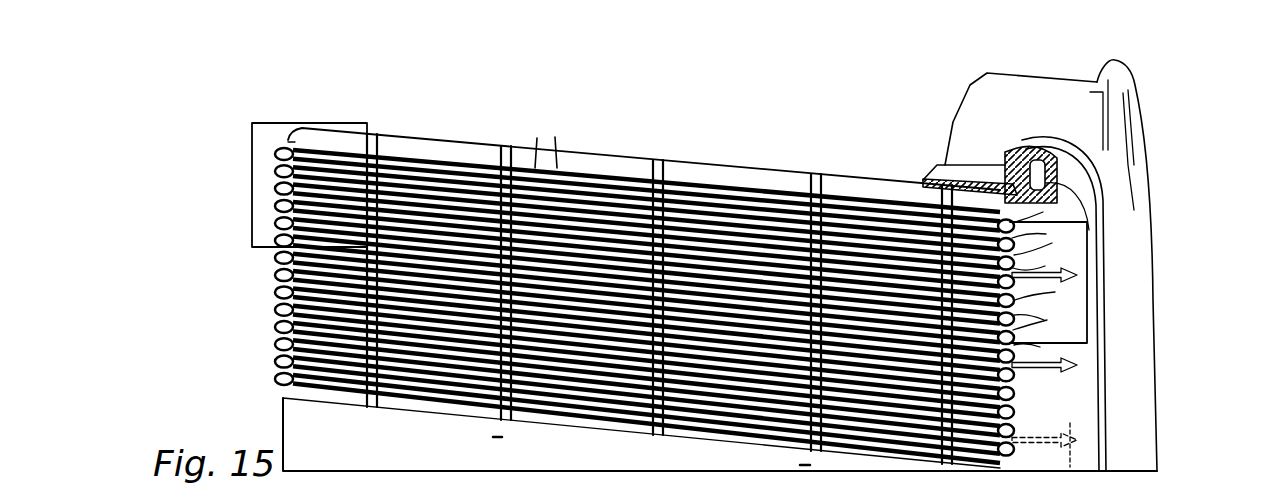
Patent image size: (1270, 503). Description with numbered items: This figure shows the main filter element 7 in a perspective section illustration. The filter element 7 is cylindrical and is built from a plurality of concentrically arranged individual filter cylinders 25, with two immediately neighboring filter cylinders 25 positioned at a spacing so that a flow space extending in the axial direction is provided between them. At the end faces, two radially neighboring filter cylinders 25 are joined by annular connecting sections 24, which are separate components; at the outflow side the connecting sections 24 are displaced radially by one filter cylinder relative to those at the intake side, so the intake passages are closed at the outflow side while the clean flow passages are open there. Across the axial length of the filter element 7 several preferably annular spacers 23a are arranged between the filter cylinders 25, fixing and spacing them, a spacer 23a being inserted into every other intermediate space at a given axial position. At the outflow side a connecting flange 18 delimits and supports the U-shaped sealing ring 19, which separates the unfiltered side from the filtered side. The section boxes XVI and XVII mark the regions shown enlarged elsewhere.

The filter element 7 is at (440, 126).
The connecting flange 18 is at (1007, 165).
The sealing ring 19 is at (1027, 150).
The spacers 23a is at (818, 190).
The connecting sections 24 is at (277, 353).
The filter cylinders 25 is at (500, 163).
The section XVI is at (252, 188).
The section XVII is at (1087, 326).